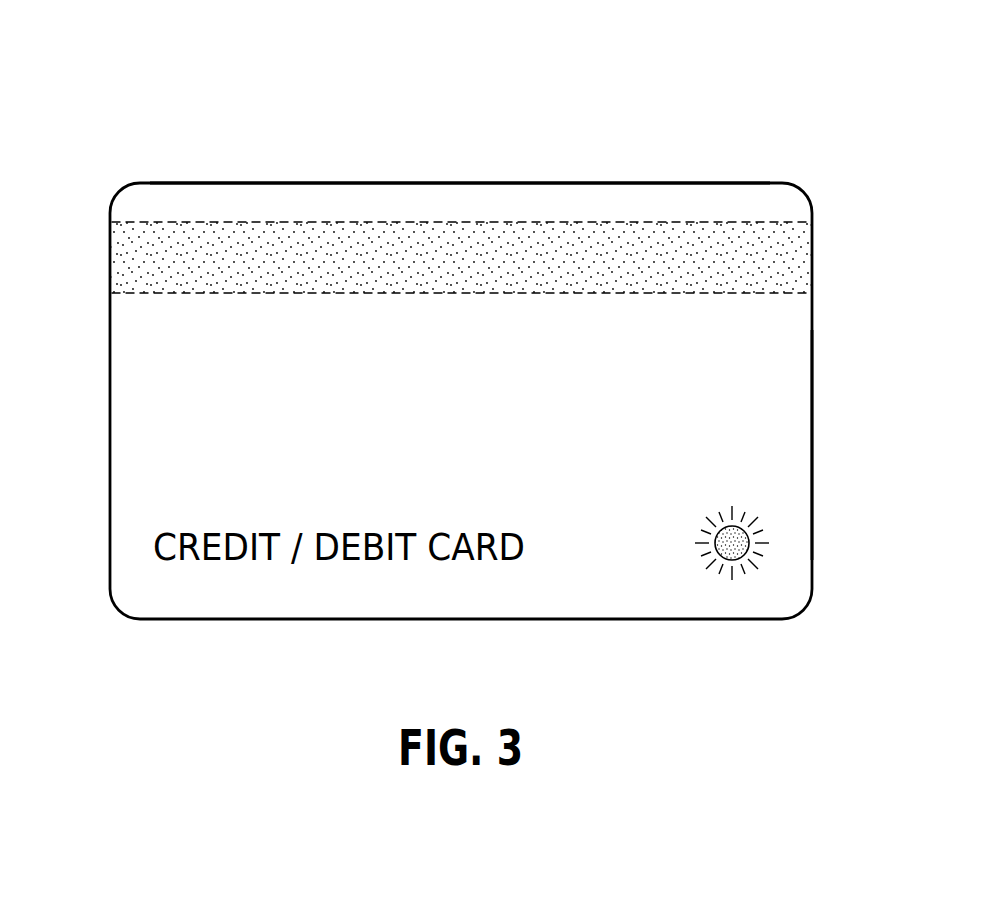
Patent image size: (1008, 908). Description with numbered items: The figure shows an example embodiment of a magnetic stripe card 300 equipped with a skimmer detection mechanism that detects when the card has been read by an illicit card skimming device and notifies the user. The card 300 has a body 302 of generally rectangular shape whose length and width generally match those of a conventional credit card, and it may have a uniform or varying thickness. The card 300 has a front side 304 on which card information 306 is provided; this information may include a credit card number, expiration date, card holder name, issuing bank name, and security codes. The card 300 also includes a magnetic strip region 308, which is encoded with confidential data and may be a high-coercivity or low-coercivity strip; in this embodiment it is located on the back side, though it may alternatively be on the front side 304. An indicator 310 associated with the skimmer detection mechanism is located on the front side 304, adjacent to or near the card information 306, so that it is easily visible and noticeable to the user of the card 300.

The magnetic stripe card 300 is at (248, 94).
The body 302 is at (512, 182).
The front side 304 is at (767, 422).
The card information 306 is at (145, 446).
The magnetic strip region 308 is at (783, 262).
The indicator 310 is at (720, 497).